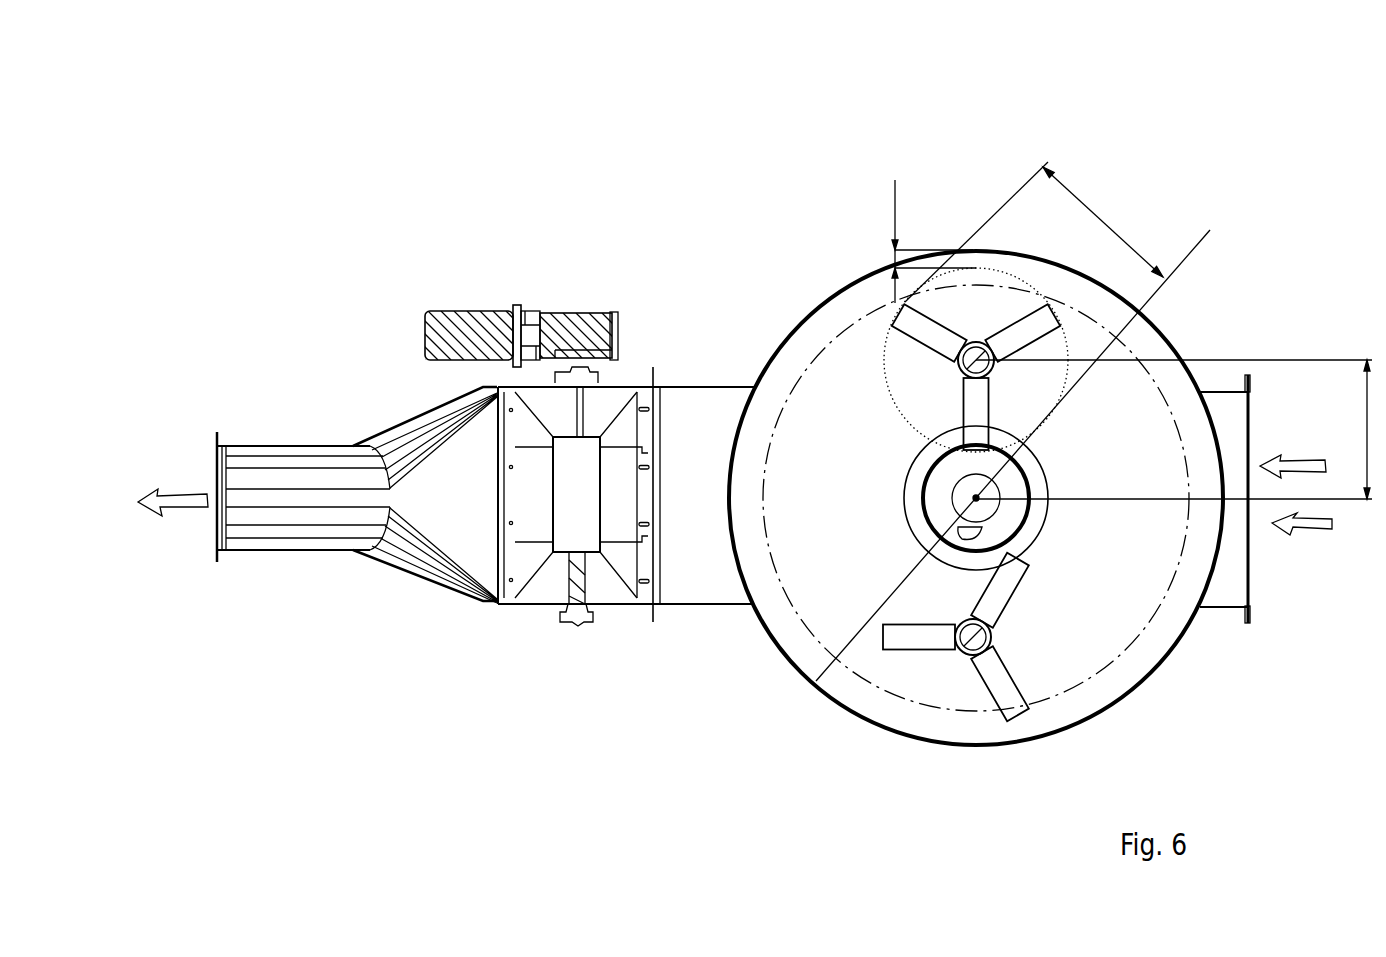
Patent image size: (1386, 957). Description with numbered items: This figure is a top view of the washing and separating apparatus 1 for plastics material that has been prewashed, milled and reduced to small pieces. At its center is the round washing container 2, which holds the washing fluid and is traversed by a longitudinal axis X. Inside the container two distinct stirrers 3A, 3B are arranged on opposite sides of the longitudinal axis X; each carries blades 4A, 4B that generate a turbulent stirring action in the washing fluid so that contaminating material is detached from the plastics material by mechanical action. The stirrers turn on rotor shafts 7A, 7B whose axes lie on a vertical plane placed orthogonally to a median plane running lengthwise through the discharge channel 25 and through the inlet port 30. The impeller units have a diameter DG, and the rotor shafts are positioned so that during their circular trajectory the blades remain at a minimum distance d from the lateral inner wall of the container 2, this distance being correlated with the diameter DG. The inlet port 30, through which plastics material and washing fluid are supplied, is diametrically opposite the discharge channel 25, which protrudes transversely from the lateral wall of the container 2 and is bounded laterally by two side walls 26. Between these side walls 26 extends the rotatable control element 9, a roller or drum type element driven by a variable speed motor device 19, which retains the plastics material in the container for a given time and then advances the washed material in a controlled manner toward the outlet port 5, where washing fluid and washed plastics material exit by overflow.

The washing and separating apparatus 1 is at (540, 125).
The washing container 2 is at (795, 655).
The first stirrer 3A is at (976, 310).
The second stirrer 3B is at (968, 694).
The blade 4A is at (923, 328).
The blade 4B is at (928, 635).
The outlet port 5 is at (183, 468).
The rotor shaft 7A is at (993, 347).
The rotor shaft 7B is at (991, 637).
The rotatable control element 9 is at (590, 447).
The variable speed motor device 19 is at (570, 337).
The discharge channel 25 is at (363, 442).
The side walls 26 is at (652, 385).
The inlet port 30 is at (1280, 394).
The longitudinal axis X is at (976, 500).
The minimum distance d is at (917, 235).
The diameter of the impeller units DG is at (1078, 192).